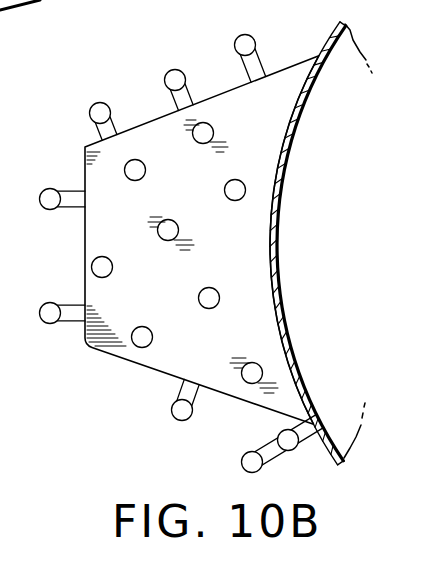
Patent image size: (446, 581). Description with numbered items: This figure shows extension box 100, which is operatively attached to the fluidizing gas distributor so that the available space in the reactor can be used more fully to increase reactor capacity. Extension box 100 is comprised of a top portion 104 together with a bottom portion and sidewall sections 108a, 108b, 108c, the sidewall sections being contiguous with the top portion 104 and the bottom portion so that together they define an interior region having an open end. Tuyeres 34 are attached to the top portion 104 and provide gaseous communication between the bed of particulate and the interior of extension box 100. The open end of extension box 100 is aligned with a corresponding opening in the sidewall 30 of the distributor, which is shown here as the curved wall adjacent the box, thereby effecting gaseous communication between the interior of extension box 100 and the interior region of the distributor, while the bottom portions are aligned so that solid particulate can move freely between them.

The extension box 100 is at (120, 385).
The top portion 104 is at (198, 190).
The sidewall 30 is at (292, 140).
The tuyeres 34 is at (235, 48).
The sidewall section 108a is at (143, 120).
The sidewall section 108b is at (84, 176).
The sidewall section 108c is at (233, 400).